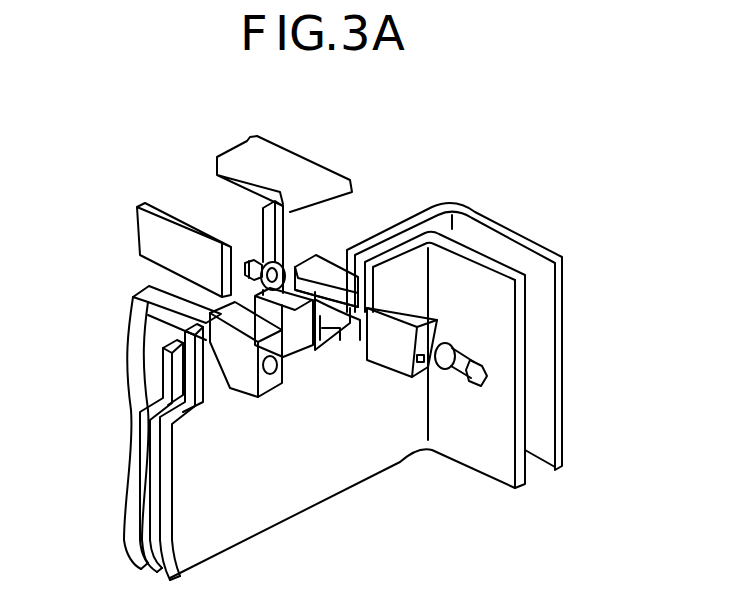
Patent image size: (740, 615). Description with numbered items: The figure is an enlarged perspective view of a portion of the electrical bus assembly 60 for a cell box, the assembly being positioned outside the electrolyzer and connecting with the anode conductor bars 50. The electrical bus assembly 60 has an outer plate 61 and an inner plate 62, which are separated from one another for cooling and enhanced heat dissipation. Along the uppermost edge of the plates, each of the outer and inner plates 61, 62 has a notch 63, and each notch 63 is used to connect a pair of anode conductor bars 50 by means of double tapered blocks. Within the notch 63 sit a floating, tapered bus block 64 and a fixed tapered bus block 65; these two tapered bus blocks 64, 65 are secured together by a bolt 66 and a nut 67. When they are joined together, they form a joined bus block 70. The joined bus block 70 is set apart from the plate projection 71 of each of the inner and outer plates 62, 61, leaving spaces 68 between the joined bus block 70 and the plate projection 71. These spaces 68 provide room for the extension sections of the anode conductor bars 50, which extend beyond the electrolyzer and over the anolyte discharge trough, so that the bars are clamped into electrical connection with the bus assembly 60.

The anode conductor bar 50 is at (148, 233).
The electrical bus assembly 60 is at (464, 131).
The outer plate 61 is at (517, 491).
The inner plate 62 is at (565, 383).
The notch 63 is at (174, 390).
The floating tapered bus block 64 is at (393, 353).
The fixed tapered bus block 65 is at (336, 261).
The bolt 66 is at (462, 380).
The nut 67 is at (249, 265).
The space 68 is at (343, 259).
The joined bus block 70 is at (210, 316).
The plate projection 71 is at (205, 372).